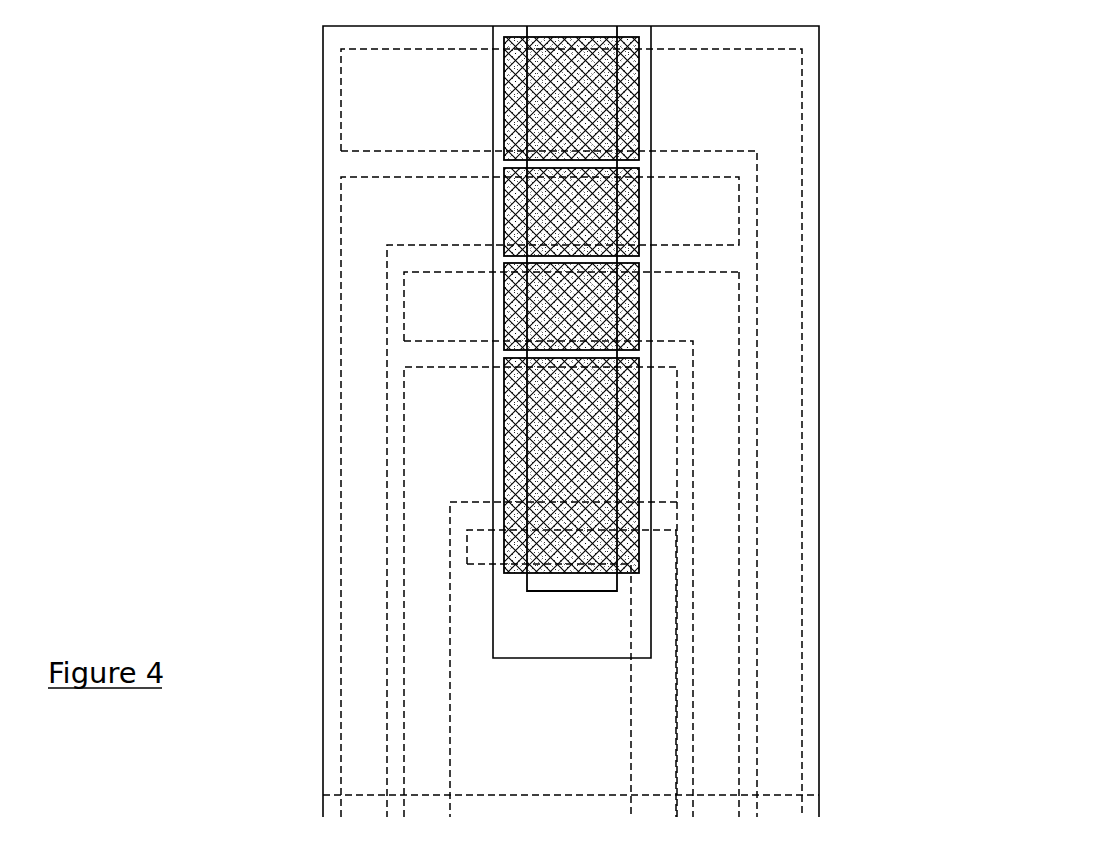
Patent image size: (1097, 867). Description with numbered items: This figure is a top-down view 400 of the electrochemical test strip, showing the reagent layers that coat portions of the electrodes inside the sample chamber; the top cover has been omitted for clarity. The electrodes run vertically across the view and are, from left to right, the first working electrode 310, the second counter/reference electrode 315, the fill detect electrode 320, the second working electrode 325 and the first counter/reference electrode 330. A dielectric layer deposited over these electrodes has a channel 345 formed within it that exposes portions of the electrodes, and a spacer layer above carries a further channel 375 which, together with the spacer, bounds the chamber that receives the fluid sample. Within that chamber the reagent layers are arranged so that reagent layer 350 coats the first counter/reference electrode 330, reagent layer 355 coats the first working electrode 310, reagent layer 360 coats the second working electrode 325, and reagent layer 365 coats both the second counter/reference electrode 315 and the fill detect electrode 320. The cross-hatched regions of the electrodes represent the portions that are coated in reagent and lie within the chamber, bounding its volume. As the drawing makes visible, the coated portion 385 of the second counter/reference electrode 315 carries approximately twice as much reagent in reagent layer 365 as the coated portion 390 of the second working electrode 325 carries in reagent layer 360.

The memory cell layout 400 is at (876, 585).
The first working electrode 310 is at (370, 215).
The second counter/reference electrode 315 is at (450, 415).
The fill detect electrode 320 is at (648, 701).
The second working electrode 325 is at (698, 305).
The first counter/reference electrode 330 is at (391, 118).
The channel 345 is at (555, 583).
The reagent layer 350 is at (630, 107).
The reagent layer 355 is at (630, 215).
The reagent layer 360 is at (510, 322).
The reagent layer 365 is at (631, 513).
The channel 375 is at (522, 635).
The portion of second counter/reference electrode 385 is at (585, 430).
The portion of second working electrode 390 is at (565, 300).